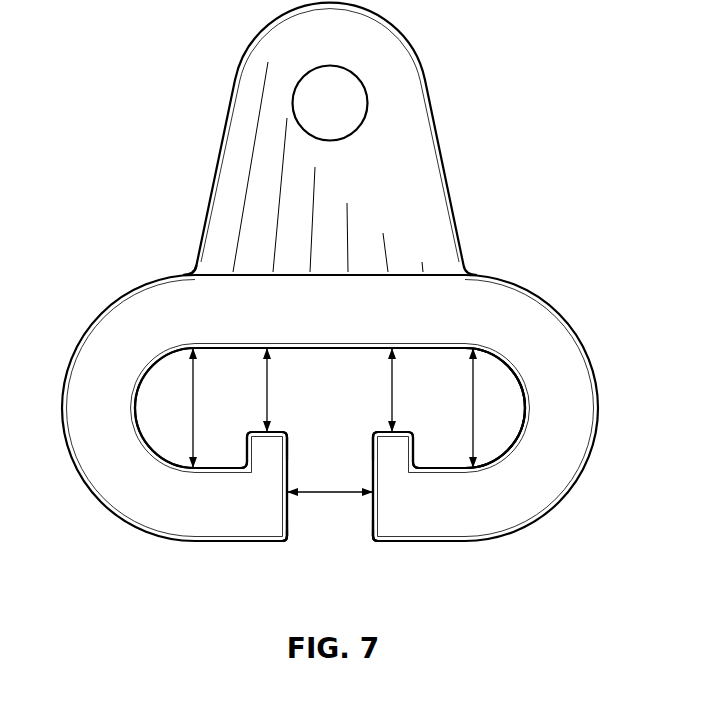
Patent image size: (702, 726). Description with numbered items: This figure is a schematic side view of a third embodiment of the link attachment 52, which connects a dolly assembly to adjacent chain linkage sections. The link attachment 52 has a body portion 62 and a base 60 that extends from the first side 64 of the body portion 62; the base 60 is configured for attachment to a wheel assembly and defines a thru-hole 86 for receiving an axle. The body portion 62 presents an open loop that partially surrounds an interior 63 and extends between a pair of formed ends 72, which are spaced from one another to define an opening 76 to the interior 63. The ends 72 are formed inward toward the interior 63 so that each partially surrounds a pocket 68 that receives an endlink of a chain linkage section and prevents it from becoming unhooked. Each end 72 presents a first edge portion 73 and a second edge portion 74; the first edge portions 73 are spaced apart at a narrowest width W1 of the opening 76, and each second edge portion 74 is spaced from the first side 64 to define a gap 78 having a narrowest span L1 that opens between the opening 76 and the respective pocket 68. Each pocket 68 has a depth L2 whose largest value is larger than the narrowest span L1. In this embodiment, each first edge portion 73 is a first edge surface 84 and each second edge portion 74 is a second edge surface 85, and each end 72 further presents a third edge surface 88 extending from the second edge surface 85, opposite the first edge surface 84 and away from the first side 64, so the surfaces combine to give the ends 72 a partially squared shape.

The link attachment 52 is at (222, 28).
The base 60 is at (432, 150).
The body portion 62 is at (560, 340).
The interior 63 is at (511, 419).
The first side 64 is at (237, 292).
The pocket 68 is at (156, 437).
The formed end 72 is at (262, 478).
The first edge portion 73 is at (290, 530).
The second edge portion 74 is at (280, 430).
The opening 76 is at (338, 556).
The gap 78 is at (256, 367).
The first edge surface 84 is at (292, 437).
The second edge surface 85 is at (257, 427).
The thru-hole 86 is at (344, 99).
The third edge surface 88 is at (243, 445).
The narrowest span L1 is at (268, 388).
The depth L2 is at (192, 412).
The narrowest width W1 is at (332, 490).